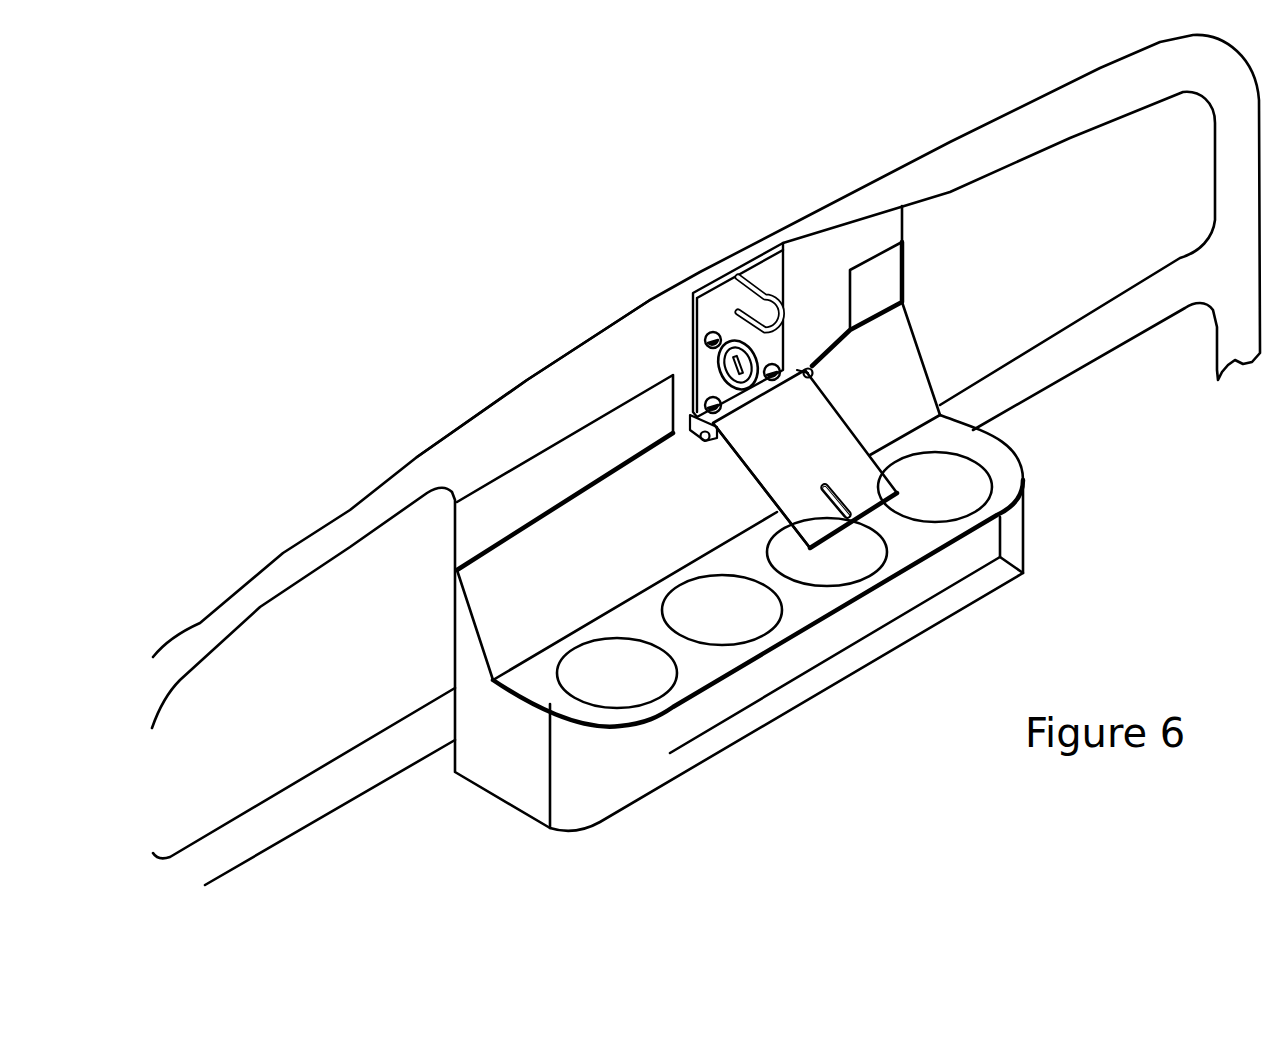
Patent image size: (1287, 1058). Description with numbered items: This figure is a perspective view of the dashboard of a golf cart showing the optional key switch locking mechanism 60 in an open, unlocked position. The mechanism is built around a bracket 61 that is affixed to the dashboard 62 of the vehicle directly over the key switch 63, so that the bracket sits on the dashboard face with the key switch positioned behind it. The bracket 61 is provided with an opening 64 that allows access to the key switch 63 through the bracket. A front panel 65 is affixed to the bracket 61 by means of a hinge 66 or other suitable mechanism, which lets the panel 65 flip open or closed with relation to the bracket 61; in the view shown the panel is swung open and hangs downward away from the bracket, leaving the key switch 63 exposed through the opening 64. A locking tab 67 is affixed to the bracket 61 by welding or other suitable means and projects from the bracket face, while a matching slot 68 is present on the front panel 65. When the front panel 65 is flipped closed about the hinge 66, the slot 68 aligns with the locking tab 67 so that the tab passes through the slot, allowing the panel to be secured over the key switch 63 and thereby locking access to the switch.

The key switch locking mechanism 60 is at (497, 280).
The bracket 61 is at (728, 290).
The dashboard 62 is at (655, 330).
The key switch 63 is at (747, 367).
The opening 64 is at (753, 348).
The front panel 65 is at (805, 433).
The hinge 66 is at (700, 438).
The locking tab 67 is at (760, 292).
The slot 68 is at (830, 500).